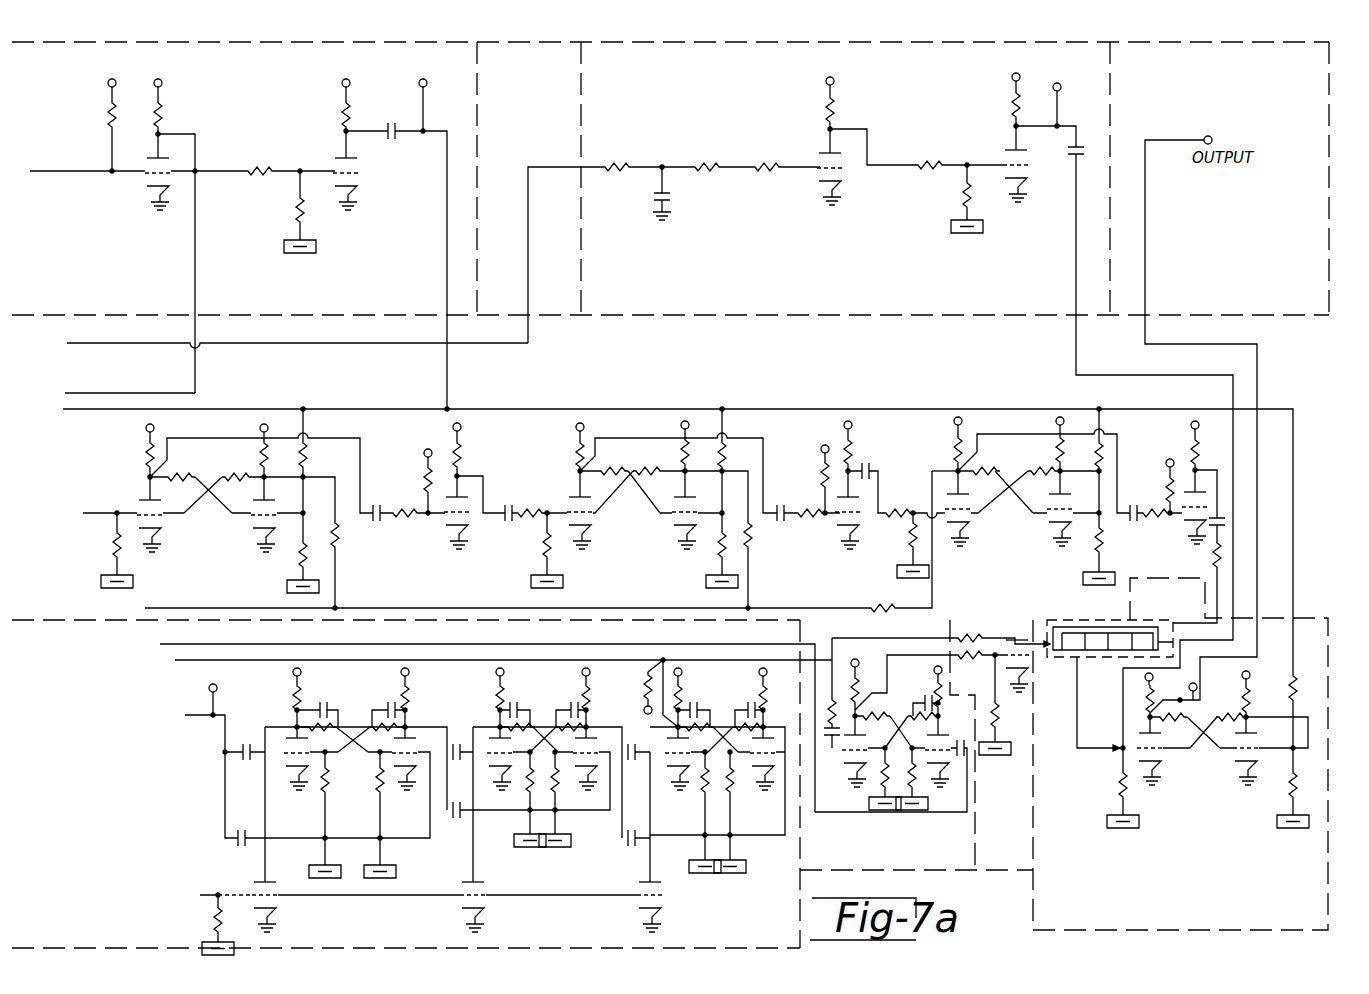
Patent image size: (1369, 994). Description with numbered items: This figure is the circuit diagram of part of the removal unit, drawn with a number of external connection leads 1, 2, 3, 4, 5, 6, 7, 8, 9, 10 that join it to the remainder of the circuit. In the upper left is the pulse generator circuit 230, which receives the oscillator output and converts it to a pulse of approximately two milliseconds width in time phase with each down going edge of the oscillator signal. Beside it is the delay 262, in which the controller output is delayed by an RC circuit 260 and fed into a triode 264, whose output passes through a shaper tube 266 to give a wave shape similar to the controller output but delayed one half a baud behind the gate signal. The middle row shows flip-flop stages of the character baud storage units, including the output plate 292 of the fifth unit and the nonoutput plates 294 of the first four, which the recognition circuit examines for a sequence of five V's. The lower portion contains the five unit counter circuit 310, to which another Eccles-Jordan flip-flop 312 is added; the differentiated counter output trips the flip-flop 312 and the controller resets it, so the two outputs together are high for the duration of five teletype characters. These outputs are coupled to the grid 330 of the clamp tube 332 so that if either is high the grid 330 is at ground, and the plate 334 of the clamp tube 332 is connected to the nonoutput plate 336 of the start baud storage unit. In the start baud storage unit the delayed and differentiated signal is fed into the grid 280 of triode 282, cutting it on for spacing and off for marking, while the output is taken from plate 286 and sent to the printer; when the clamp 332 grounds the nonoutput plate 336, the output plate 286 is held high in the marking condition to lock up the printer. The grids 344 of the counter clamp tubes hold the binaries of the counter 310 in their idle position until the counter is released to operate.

The input lead 1 is at (80, 171).
The lead 2 is at (279, 343).
The lead 3 is at (112, 392).
The supply lead 4 is at (661, 538).
The lead 5 is at (92, 546).
The lead 6 is at (529, 545).
The lead 7 is at (478, 724).
The lead 8 is at (492, 662).
The lead 9 is at (214, 765).
The lead 10 is at (408, 921).
The pulse generator circuit 230 is at (276, 108).
The RC circuit 260 is at (664, 169).
The delay 262 is at (696, 123).
The triode 264 is at (826, 150).
The shaper tube 266 is at (1010, 145).
The grid 280 is at (1158, 768).
The triode 282 is at (1140, 730).
The output plate 286 is at (1196, 745).
The output plate 292 is at (958, 470).
The nonoutput plates 294 is at (580, 471).
The five unit counter circuit 310 is at (556, 922).
The Eccles-Jordan flip-flop 312 is at (960, 870).
The grid 330 is at (1013, 638).
The clamp tube 332 is at (1017, 792).
The plate 334 is at (1044, 622).
The nonoutput plate 336 is at (1243, 706).
The grids 344 is at (272, 897).